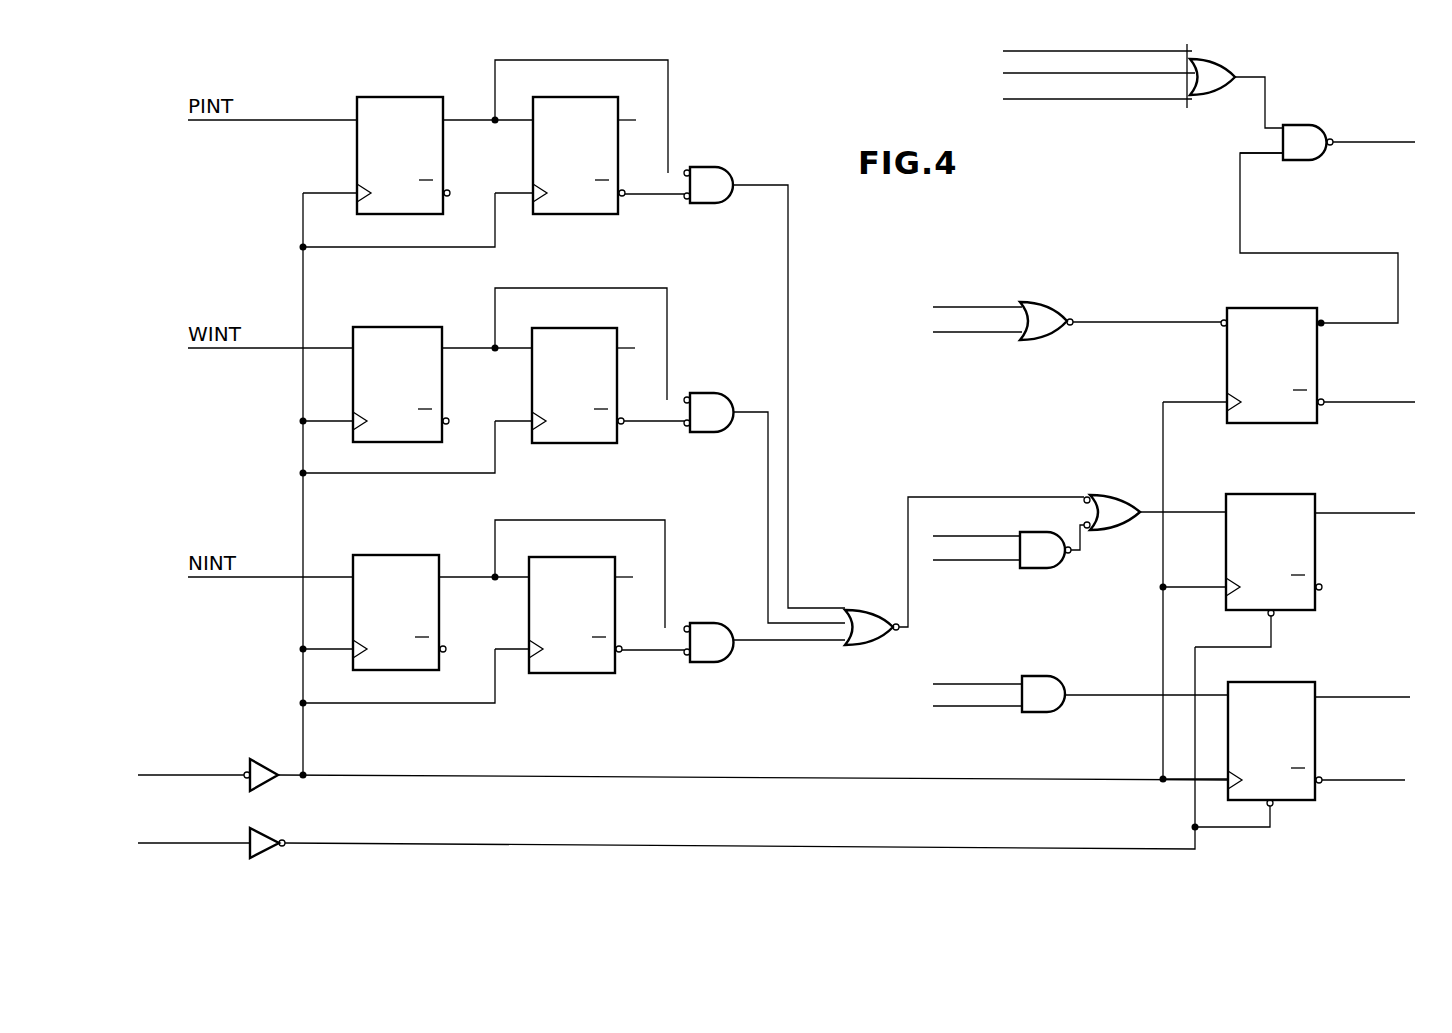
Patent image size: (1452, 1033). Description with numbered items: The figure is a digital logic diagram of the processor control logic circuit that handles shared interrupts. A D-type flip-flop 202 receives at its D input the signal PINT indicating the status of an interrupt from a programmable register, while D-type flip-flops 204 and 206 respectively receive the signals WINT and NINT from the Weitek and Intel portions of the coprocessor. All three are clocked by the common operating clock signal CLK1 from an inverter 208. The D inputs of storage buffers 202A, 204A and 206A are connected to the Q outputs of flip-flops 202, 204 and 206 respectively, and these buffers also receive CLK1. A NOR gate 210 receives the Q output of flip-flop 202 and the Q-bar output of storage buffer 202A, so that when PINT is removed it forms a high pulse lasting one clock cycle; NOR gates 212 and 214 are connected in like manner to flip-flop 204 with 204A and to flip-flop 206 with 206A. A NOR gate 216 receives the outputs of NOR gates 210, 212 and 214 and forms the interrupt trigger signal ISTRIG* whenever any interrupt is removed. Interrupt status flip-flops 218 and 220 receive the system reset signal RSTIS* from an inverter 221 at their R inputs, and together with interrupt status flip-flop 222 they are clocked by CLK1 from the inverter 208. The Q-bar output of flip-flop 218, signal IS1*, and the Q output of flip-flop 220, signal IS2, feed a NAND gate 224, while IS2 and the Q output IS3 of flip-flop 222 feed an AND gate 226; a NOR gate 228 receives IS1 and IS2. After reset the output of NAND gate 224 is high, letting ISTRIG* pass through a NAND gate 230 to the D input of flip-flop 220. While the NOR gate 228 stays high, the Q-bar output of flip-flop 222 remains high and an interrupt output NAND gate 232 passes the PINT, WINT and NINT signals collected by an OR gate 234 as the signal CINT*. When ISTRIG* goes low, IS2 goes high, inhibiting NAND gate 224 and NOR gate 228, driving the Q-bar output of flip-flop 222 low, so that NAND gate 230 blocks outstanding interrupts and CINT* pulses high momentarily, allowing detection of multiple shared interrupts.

The D-type flip-flop 202 is at (402, 96).
The storage buffer 202A is at (571, 216).
The D-type flip-flop 204 is at (397, 326).
The storage buffer 204A is at (566, 444).
The D-type flip-flop 206 is at (400, 554).
The storage buffer 206A is at (567, 674).
The inverter 208 is at (266, 760).
The NOR gate 210 is at (702, 166).
The NOR gate 212 is at (702, 392).
The NOR gate 214 is at (700, 622).
The NOR gate 216 is at (858, 647).
The interrupt status flip-flop 218 is at (1297, 802).
The interrupt status flip-flop 220 is at (1246, 494).
The inverter 221 is at (270, 852).
The interrupt status flip-flop 222 is at (1262, 425).
The NAND gate 224 is at (1037, 570).
The AND gate 226 is at (1034, 713).
The NOR gate 228 is at (1040, 341).
The NAND gate 230 is at (1112, 493).
The interrupt output NAND gate 232 is at (1300, 125).
The OR gate 234 is at (1227, 64).